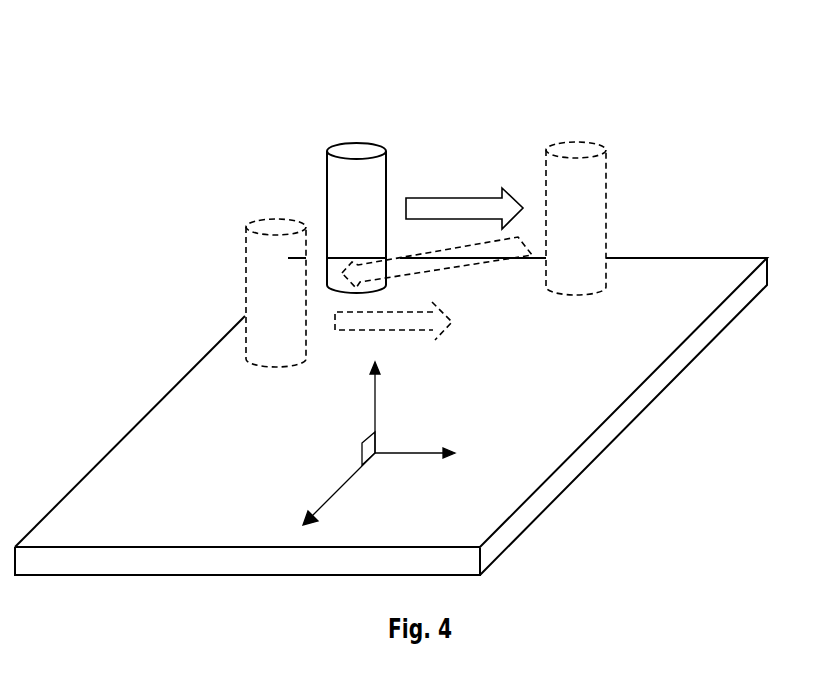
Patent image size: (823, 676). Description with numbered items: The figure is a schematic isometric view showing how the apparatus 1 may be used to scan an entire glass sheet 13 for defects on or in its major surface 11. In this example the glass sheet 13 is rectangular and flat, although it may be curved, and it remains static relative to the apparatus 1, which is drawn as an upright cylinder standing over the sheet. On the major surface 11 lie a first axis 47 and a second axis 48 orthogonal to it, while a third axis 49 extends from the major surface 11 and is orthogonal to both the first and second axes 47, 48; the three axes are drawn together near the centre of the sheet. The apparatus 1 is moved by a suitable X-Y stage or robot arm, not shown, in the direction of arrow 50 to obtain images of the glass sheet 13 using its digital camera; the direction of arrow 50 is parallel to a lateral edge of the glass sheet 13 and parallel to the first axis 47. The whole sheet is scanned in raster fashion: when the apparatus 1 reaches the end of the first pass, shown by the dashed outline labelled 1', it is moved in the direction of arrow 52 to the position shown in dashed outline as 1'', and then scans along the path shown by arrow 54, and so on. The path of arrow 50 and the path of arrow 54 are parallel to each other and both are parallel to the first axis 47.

The apparatus 1 is at (299, 170).
The apparatus at end of first pass 1' is at (585, 156).
The apparatus at start of next pass 1'' is at (227, 251).
The major surface 11 is at (660, 290).
The glass sheet 13 is at (205, 400).
The first axis 47 is at (415, 443).
The second axis 48 is at (339, 493).
The third axis 49 is at (390, 413).
The arrow 50 is at (467, 210).
The arrow 52 is at (522, 246).
The arrow 54 is at (446, 322).